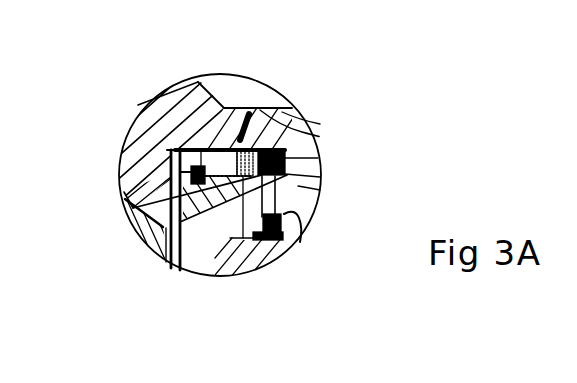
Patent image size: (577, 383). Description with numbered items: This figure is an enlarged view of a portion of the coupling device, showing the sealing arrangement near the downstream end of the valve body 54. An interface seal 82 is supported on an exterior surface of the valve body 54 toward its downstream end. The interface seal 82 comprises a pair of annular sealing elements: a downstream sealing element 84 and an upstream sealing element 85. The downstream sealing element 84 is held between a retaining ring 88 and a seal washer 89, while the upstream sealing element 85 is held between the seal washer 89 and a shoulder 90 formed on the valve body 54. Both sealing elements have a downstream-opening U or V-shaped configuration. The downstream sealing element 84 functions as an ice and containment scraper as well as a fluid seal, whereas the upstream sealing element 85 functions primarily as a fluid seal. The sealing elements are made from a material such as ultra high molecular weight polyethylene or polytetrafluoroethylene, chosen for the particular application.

The interface seal 82 is at (249, 114).
The upstream sealing element 85 is at (300, 124).
The shoulder 90 is at (285, 154).
The valve body 54 is at (300, 201).
The retaining ring 88 is at (136, 187).
The downstream sealing element 84 is at (187, 262).
The seal washer 89 is at (266, 240).